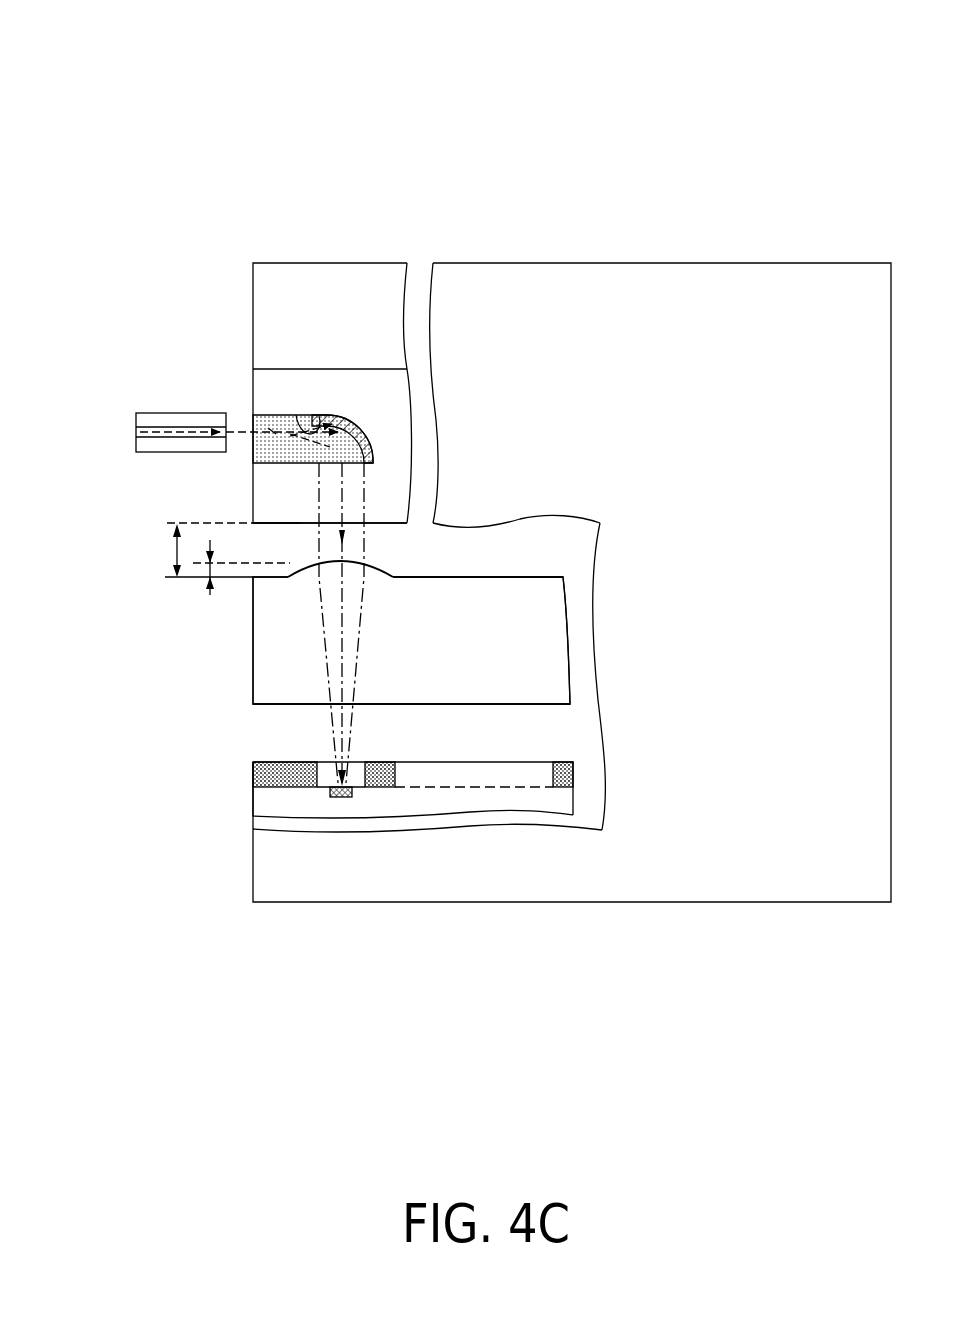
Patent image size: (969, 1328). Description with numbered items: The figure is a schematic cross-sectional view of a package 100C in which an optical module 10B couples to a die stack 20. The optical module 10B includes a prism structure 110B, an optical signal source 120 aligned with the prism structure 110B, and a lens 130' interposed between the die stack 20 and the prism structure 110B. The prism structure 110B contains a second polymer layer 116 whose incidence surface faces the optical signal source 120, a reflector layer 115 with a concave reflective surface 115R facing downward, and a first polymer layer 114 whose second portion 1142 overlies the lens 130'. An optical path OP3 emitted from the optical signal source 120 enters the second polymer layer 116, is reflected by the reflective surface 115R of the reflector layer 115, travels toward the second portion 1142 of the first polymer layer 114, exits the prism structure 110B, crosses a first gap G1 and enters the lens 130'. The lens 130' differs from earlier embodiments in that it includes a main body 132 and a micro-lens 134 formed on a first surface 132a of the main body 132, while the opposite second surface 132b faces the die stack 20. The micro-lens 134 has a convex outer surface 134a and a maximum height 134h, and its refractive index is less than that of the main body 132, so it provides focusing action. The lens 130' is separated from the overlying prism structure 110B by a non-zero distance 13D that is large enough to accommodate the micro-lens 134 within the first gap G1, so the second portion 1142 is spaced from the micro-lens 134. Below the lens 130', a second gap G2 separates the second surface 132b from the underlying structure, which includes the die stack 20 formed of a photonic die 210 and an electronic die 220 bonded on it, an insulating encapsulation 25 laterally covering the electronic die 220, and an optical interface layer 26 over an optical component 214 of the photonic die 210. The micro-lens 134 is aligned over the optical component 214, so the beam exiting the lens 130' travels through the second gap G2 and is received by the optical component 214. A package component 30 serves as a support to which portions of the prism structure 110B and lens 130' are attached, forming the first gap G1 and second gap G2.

The optical module 10B is at (127, 13).
The prism structure 110B is at (312, 263).
The optical signal source 120 is at (148, 445).
The lens 130' is at (369, 640).
The reflector layer 115 is at (335, 414).
The reflective surface 115R is at (300, 432).
The optical path OP3 is at (272, 430).
The second polymer layer 116 is at (253, 455).
The second portion of the first polymer layer 1142 is at (257, 495).
The first polymer layer 114 is at (332, 446).
The non-zero distance 13D is at (190, 550).
The maximum height 134h is at (205, 568).
The first gap G1 is at (261, 548).
The micro-lens 134 is at (313, 574).
The main body 132 is at (272, 668).
The convex outer surface 134a is at (387, 564).
The first surface 132a is at (497, 565).
The second surface 132b is at (402, 709).
The second gap G2 is at (292, 730).
The optical component 214 is at (318, 791).
The optical interface layer 26 is at (358, 780).
The insulating encapsulation 25 is at (382, 780).
The electronic die 220 is at (445, 772).
The photonic die 210 is at (505, 795).
The die stack 20 is at (379, 892).
The package component 30 is at (746, 873).
The package 100C is at (861, 1068).